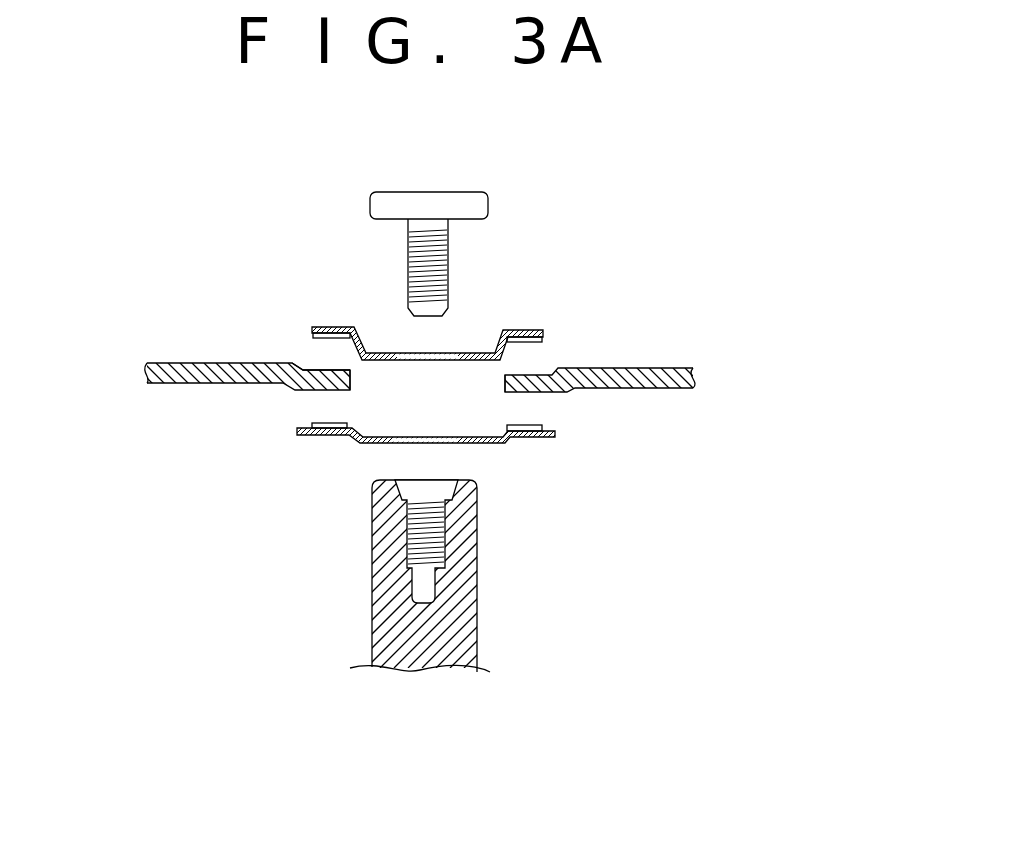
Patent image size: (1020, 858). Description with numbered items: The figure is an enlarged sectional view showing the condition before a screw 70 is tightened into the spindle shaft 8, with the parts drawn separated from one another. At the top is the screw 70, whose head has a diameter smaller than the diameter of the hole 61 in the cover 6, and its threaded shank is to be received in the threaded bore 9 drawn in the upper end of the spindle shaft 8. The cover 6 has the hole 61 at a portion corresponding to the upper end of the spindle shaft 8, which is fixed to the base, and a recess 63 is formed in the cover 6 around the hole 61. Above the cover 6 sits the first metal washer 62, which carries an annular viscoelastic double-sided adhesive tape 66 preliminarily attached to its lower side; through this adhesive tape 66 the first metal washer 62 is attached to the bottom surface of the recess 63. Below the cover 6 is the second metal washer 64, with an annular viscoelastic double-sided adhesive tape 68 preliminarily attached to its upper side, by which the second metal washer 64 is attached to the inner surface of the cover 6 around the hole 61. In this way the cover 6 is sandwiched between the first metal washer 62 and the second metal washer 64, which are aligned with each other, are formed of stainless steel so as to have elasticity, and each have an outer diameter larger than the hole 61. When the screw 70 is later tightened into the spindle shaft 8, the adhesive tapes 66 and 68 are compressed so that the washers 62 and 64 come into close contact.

The screw 70 is at (430, 192).
The first metal washer 62 is at (528, 330).
The annular viscoelastic double-sided adhesive tape 66 is at (537, 345).
The cover 6 is at (200, 363).
The recess 63 is at (322, 372).
The hole 61 is at (351, 380).
The annular viscoelastic double-sided adhesive tape 68 is at (530, 425).
The second metal washer 64 is at (530, 438).
The spindle shaft 8 is at (463, 643).
The threaded hole 9 is at (407, 530).